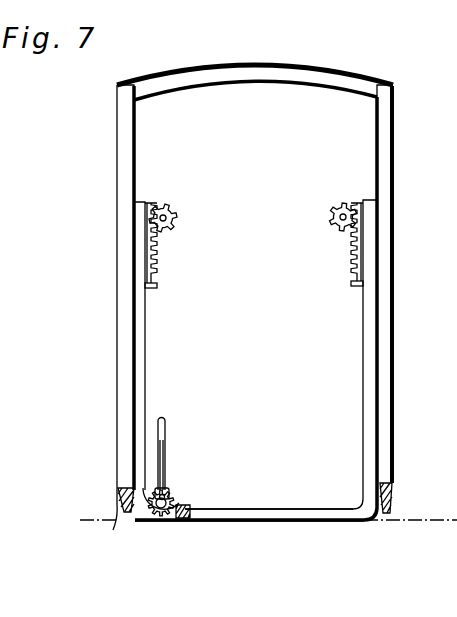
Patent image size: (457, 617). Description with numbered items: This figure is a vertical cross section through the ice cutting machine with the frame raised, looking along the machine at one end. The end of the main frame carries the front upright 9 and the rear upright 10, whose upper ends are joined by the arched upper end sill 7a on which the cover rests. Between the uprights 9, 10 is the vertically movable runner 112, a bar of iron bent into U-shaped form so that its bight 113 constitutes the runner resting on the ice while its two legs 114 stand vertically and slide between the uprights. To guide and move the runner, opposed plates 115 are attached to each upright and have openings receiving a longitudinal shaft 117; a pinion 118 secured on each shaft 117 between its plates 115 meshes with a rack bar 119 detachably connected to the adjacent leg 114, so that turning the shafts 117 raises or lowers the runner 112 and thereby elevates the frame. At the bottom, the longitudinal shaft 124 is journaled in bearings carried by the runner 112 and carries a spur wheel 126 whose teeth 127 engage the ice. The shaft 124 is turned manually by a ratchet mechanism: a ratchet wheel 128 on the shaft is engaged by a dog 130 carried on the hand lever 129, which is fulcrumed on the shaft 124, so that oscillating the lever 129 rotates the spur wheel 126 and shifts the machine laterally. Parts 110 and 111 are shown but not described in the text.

The upper end sill 7a is at (255, 72).
The front upright 9 is at (117, 149).
The rear upright 10 is at (117, 371).
The sealing wedge 110 is at (113, 530).
The sealing wedge 111 is at (392, 505).
The runner 112 is at (293, 524).
The bight 113 is at (333, 515).
The leg 114 is at (146, 384).
The plate 115 is at (161, 243).
The longitudinal shaft 117 is at (178, 215).
The pinion 118 is at (168, 206).
The rack bar 119 is at (158, 287).
The longitudinal shaft 124 is at (172, 492).
The spur wheel 126 is at (158, 521).
The teeth 127 is at (185, 493).
The ratchet wheel 128 is at (148, 527).
The hand lever 129 is at (166, 441).
The dog 130 is at (168, 477).